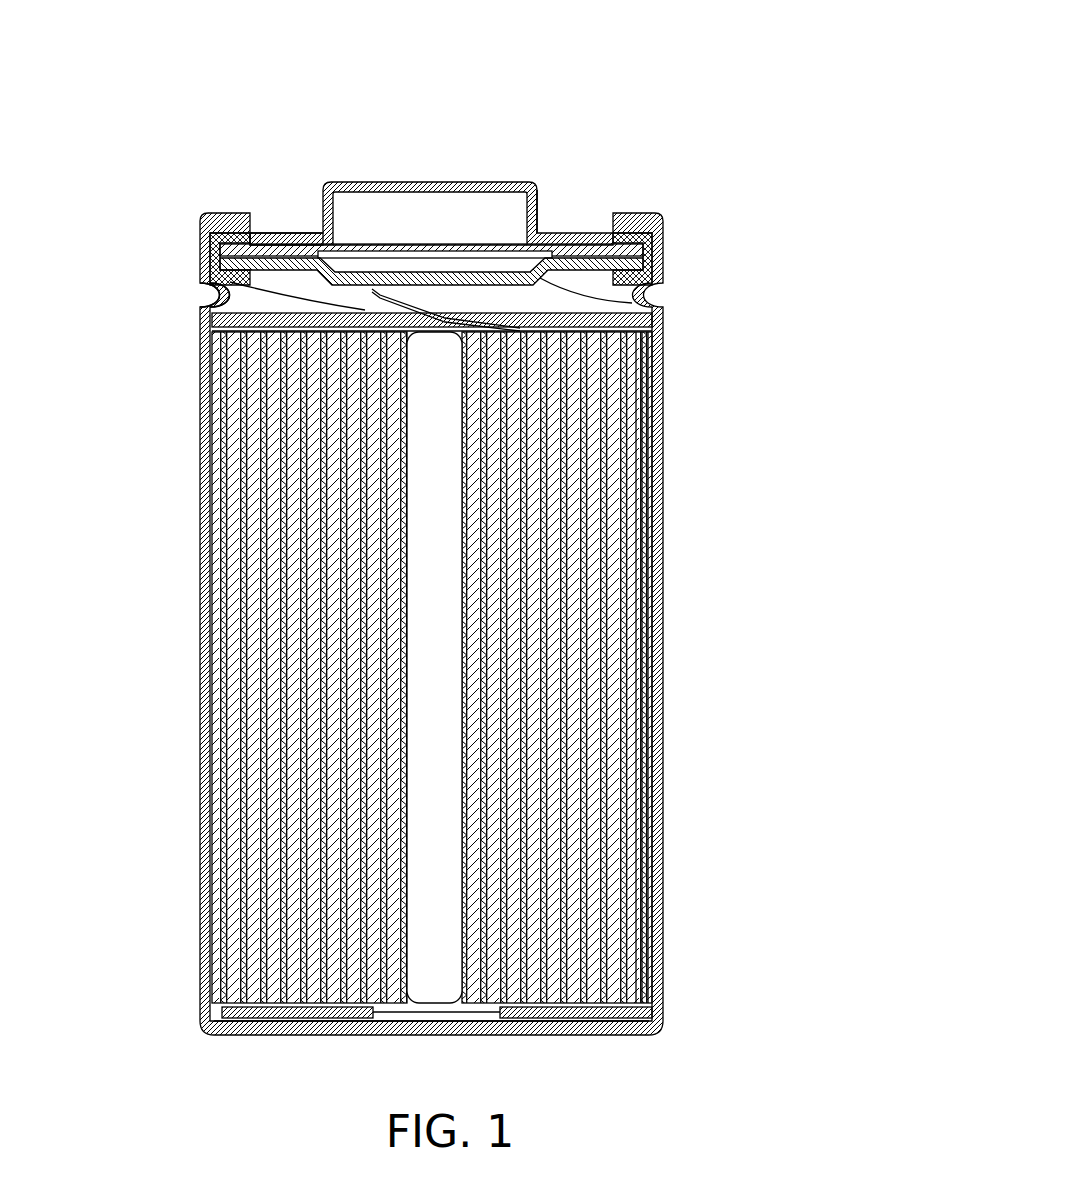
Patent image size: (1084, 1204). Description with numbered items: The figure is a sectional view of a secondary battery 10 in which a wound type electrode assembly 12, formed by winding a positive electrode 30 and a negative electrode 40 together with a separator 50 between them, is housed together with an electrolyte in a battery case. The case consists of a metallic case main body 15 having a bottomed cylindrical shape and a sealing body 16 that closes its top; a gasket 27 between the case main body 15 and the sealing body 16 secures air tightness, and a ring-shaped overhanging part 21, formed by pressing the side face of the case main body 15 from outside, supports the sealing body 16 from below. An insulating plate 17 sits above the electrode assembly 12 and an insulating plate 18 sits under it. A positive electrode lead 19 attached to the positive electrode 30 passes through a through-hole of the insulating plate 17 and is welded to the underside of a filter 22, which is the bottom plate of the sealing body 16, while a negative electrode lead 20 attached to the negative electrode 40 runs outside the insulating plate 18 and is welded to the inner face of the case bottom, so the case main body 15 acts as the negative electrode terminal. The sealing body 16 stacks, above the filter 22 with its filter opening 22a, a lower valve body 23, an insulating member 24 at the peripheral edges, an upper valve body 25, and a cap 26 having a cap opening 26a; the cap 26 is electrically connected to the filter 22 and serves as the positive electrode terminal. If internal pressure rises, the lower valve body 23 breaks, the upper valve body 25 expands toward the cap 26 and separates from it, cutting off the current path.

The secondary battery 10 is at (648, 73).
The wound type electrode assembly 12 is at (507, 667).
The case main body 15 is at (664, 213).
The sealing body 16 is at (490, 208).
The insulating plate 17 is at (660, 318).
The insulating plate 18 is at (664, 1016).
The positive electrode lead 19 is at (205, 280).
The negative electrode lead 20 is at (200, 1002).
The overhanging part 21 is at (208, 302).
The filter 22 is at (438, 270).
The filter opening 22a is at (478, 252).
The lower valve body 23 is at (343, 240).
The insulating member 24 is at (280, 235).
The upper valve body 25 is at (362, 236).
The cap 26 is at (508, 183).
The cap opening 26a is at (540, 198).
The gasket 27 is at (668, 234).
The positive electrode 30 is at (654, 730).
The negative electrode 40 is at (654, 758).
The separator 50 is at (654, 786).